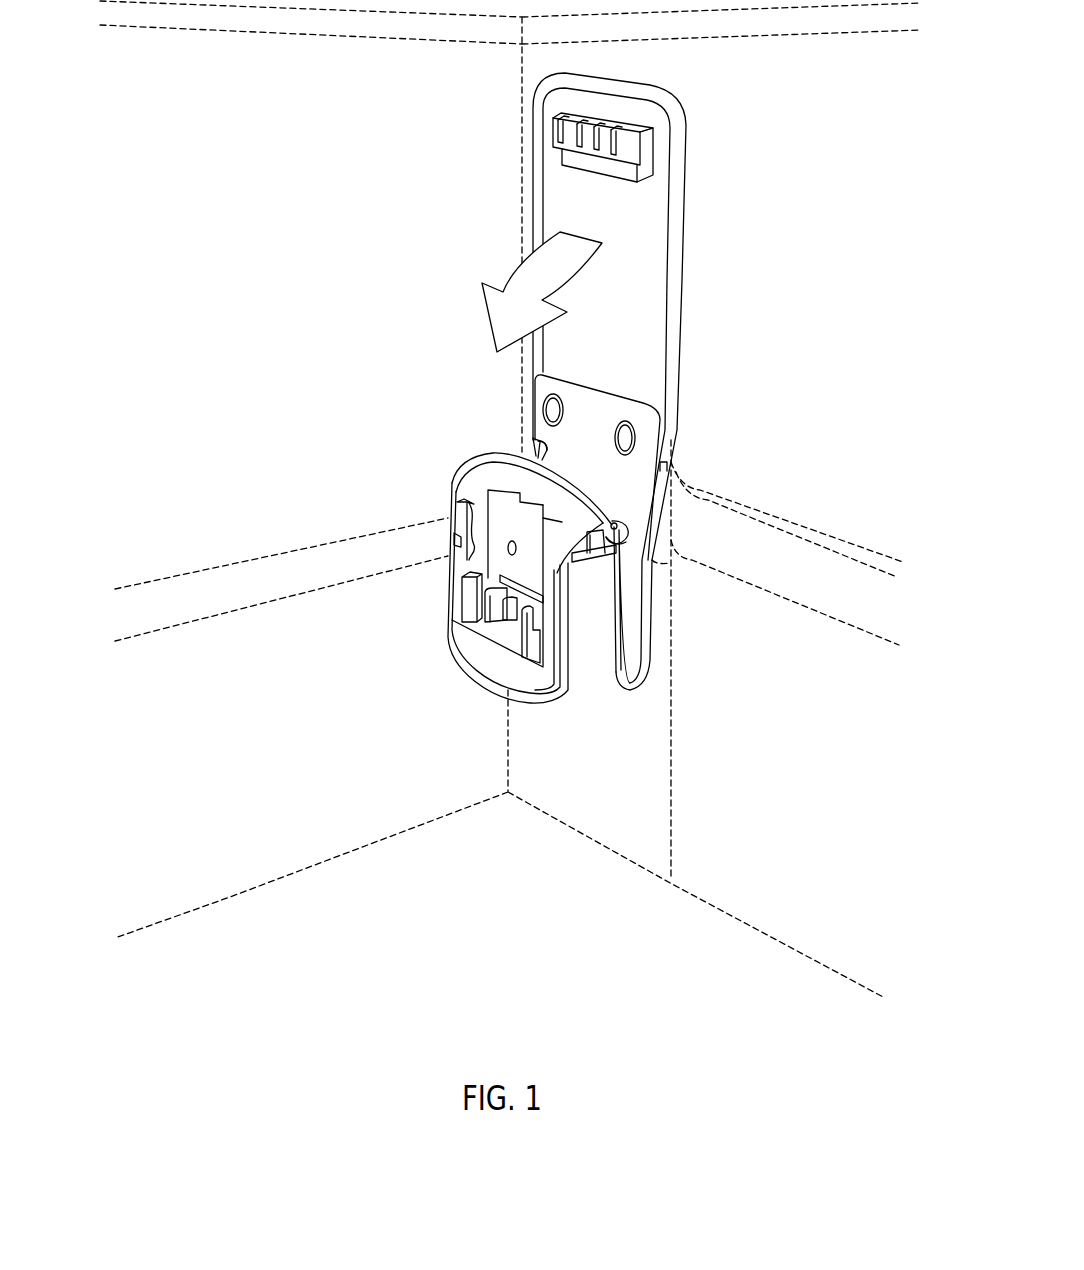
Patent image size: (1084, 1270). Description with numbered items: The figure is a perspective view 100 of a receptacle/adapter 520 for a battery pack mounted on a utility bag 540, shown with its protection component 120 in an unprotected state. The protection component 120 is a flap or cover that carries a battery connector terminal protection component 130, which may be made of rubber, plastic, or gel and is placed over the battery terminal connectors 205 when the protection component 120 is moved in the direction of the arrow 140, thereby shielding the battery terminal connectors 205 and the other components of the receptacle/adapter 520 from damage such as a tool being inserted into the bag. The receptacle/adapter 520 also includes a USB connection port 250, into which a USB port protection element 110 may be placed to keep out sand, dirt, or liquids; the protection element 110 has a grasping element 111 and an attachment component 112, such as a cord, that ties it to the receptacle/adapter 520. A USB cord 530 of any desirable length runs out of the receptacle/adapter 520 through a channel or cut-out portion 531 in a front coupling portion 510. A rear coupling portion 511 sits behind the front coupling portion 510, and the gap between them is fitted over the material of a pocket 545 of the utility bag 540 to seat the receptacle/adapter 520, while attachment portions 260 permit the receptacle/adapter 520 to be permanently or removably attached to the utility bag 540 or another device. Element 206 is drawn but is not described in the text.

The perspective view 100 is at (806, 140).
The USB port protection element 110 is at (600, 555).
The grasping element 111 is at (618, 527).
The attachment component 112 is at (615, 545).
The protection component 120 is at (679, 272).
The battery connector terminal protection component 130 is at (640, 141).
The arrow 140 is at (520, 260).
The battery terminal connectors 205 is at (507, 608).
The side retaining tab 206 is at (467, 563).
The USB connection port 250 is at (597, 647).
The attachment portions 260 is at (638, 460).
The front coupling portion 510 is at (627, 438).
The rear coupling portion 511 is at (670, 465).
The receptacle/adapter 520 is at (452, 483).
The USB cord 530 is at (530, 457).
The channel or cut-out portion 531 is at (530, 442).
The utility bag 540 is at (620, 793).
The pocket 545 is at (663, 487).